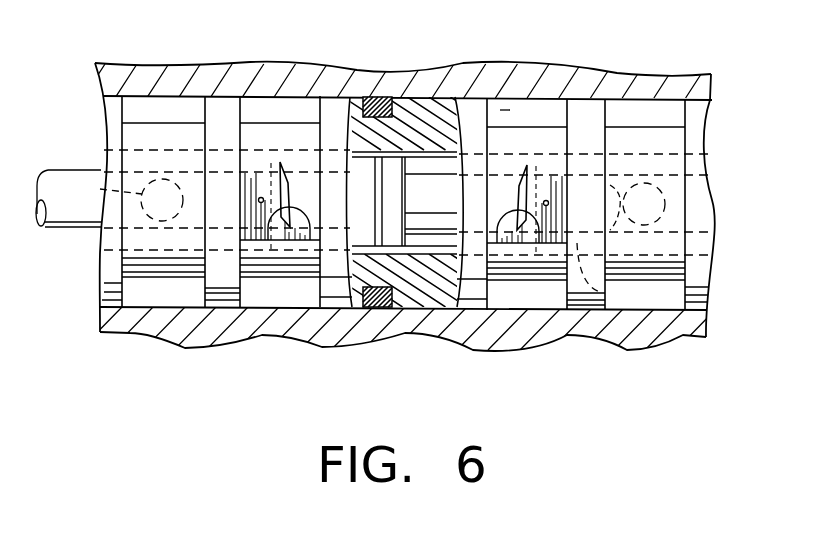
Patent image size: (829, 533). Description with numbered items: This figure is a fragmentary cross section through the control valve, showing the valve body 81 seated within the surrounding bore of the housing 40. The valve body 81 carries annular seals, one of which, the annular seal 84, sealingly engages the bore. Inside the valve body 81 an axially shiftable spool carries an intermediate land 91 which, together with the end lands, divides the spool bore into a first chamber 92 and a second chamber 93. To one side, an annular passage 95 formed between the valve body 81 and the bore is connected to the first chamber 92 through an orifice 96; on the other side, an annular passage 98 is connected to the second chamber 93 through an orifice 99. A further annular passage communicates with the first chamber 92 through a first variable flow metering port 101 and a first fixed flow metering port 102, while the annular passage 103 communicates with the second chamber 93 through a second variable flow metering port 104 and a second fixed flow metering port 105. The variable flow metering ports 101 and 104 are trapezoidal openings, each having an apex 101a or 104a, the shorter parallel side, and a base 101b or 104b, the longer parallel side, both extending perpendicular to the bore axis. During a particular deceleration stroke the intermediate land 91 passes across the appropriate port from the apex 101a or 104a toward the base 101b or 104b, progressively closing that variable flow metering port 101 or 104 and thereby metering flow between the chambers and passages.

The housing 40 is at (650, 82).
The valve body 81 is at (418, 110).
The annular seal 84 is at (372, 108).
The intermediate land 91 is at (388, 183).
The first chamber 92 is at (130, 158).
The second chamber 93 is at (600, 292).
The annular passage 95 is at (130, 108).
The orifice 96 is at (98, 190).
The annular passage 98 is at (668, 115).
The orifice 99 is at (665, 197).
The first variable flow metering port 101 is at (276, 163).
The apex 101a is at (307, 250).
The base 101b is at (267, 242).
The first fixed flow metering port 102 is at (261, 197).
The annular passage 103 is at (505, 110).
The second variable flow metering port 104 is at (518, 163).
The apex 104a is at (497, 253).
The base 104b is at (540, 245).
The second fixed flow metering port 105 is at (546, 200).